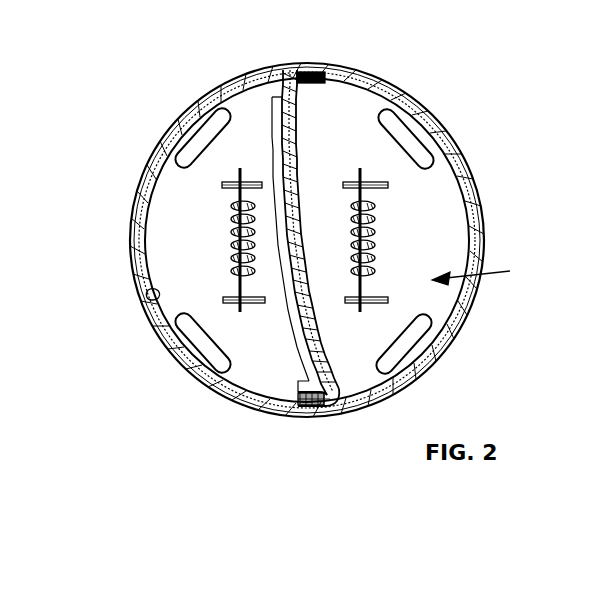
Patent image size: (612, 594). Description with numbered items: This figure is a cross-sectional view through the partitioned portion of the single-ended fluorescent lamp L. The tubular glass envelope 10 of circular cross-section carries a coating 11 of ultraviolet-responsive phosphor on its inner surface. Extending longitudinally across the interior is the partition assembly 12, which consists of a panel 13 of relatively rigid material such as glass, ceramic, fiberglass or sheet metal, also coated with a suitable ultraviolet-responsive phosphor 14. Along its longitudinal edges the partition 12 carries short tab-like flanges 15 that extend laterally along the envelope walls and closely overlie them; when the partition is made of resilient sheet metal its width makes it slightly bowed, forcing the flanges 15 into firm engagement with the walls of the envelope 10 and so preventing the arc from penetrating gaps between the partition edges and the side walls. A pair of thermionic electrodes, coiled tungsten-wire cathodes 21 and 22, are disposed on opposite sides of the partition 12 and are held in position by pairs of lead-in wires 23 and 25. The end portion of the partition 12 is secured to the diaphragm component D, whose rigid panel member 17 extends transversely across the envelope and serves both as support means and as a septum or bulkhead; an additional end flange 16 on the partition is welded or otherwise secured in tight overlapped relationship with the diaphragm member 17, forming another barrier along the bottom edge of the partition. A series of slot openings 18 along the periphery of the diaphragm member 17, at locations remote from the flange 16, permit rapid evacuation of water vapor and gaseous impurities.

The tubular glass envelope 10 is at (131, 222).
The phosphor coating 11 is at (150, 294).
The partition assembly 12 is at (290, 365).
The panel 13 is at (297, 150).
The ultraviolet-responsive phosphor 14 is at (322, 359).
The flanges 15 is at (326, 75).
The end flange 16 is at (272, 122).
The diaphragm member 17 is at (430, 199).
The slot openings 18 is at (200, 142).
The coiled tungsten-wire cathode 21 is at (236, 242).
The coiled tungsten-wire cathode 22 is at (373, 238).
The lead-in wires 23 is at (240, 172).
The lead-in wires 25 is at (376, 183).
The diaphragm component D is at (478, 275).
The fluorescent lamp L is at (108, 158).